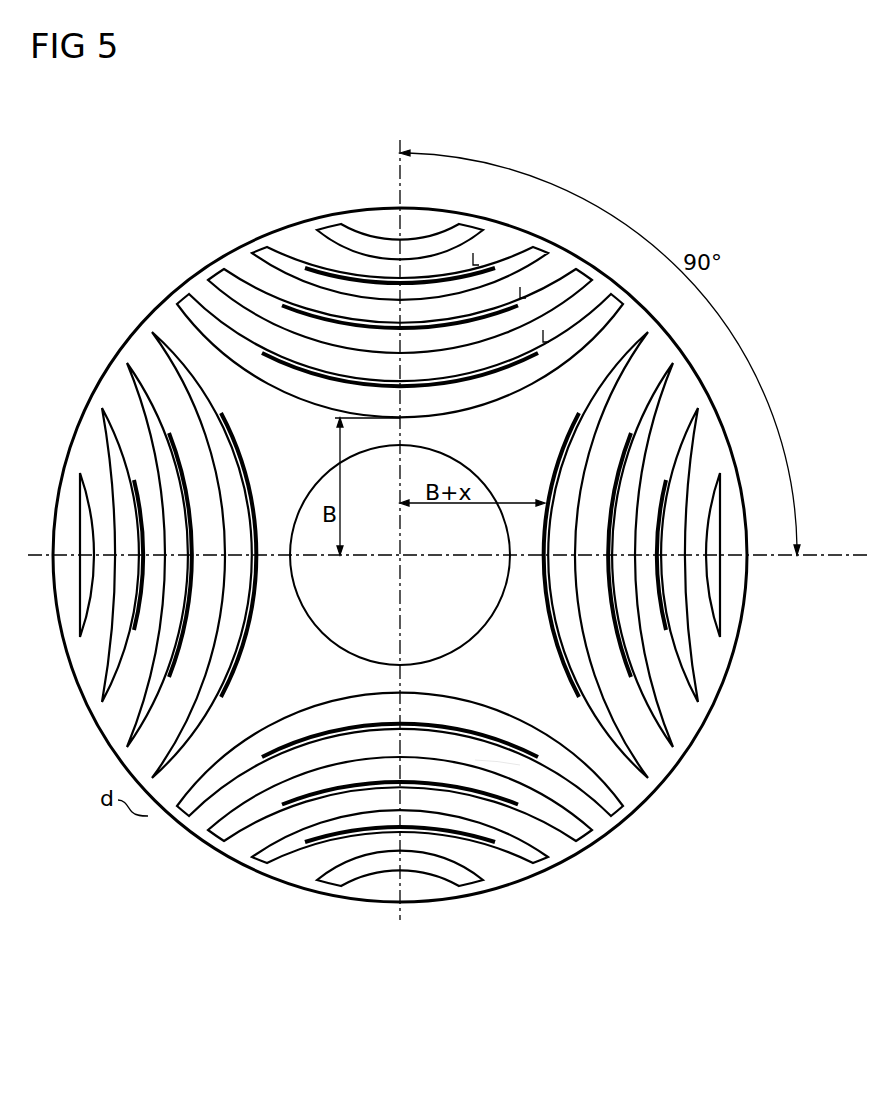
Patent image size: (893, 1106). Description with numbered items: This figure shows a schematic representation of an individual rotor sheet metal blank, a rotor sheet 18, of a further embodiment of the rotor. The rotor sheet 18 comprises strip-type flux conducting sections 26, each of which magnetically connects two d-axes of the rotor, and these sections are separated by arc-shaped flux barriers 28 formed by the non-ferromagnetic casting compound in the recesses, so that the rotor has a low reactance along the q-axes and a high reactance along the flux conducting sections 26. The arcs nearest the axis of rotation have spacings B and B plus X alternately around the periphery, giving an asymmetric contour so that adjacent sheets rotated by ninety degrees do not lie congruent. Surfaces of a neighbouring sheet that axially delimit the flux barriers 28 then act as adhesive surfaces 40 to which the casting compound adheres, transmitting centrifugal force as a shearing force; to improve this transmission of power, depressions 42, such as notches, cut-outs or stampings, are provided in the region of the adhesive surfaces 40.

The rotor sheet 18 is at (146, 321).
The flux conducting section 26 is at (478, 760).
The flux barrier 28 is at (453, 720).
The adhesive surface 40 is at (667, 480).
The depression 42 is at (340, 268).